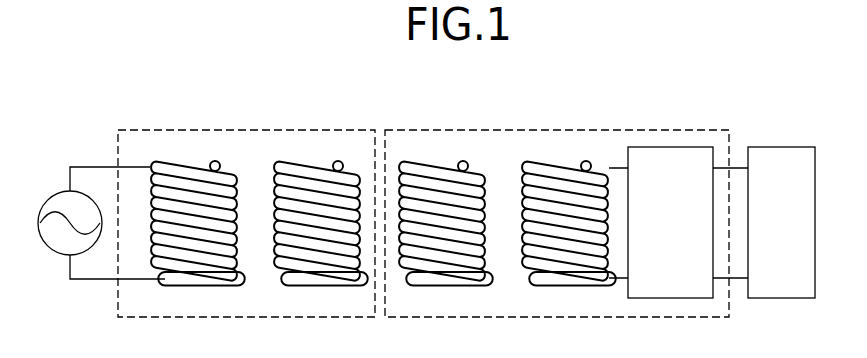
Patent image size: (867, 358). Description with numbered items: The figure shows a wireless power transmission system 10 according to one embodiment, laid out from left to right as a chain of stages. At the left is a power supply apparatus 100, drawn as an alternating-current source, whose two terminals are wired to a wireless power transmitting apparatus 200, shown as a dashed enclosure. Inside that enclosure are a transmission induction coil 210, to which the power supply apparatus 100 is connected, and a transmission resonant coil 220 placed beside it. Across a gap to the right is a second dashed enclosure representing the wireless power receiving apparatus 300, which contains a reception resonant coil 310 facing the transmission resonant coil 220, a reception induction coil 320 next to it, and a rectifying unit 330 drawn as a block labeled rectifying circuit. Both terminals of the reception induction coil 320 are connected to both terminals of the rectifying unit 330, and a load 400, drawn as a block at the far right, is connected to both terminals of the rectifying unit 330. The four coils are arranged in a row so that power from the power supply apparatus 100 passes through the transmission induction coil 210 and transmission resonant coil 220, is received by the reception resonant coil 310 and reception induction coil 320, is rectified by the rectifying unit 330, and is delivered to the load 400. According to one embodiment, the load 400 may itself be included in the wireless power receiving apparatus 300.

The wireless power transmission system 10 is at (84, 75).
The power supply apparatus 100 is at (47, 197).
The wireless power transmitting apparatus 200 is at (141, 130).
The transmission induction coil 210 is at (204, 174).
The transmission resonant coil 220 is at (317, 172).
The wireless power receiving apparatus 300 is at (490, 130).
The reception resonant coil 310 is at (432, 170).
The reception induction coil 320 is at (571, 170).
The rectifying unit 330 is at (668, 147).
The load 400 is at (783, 147).